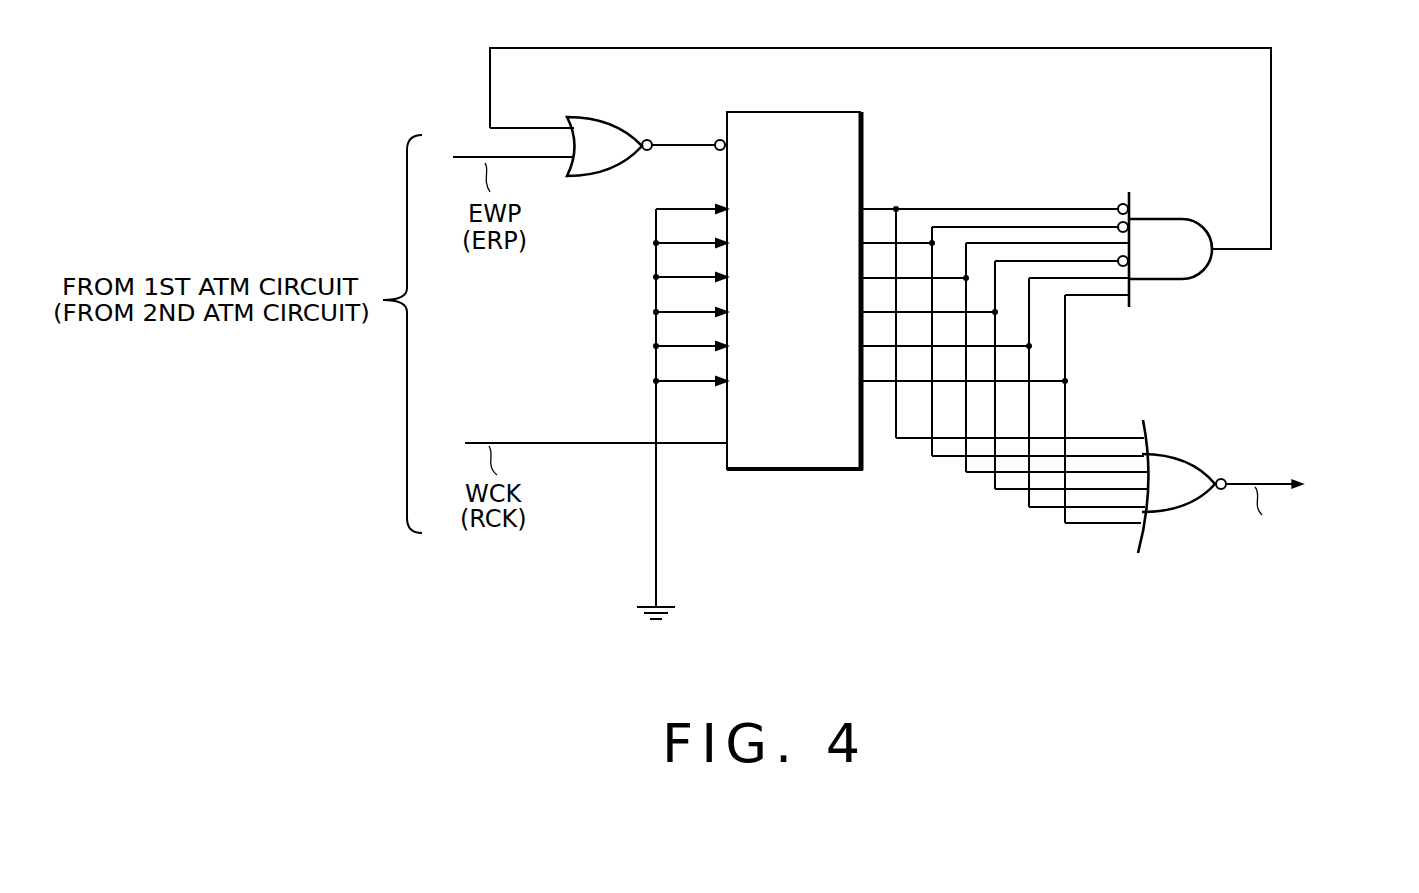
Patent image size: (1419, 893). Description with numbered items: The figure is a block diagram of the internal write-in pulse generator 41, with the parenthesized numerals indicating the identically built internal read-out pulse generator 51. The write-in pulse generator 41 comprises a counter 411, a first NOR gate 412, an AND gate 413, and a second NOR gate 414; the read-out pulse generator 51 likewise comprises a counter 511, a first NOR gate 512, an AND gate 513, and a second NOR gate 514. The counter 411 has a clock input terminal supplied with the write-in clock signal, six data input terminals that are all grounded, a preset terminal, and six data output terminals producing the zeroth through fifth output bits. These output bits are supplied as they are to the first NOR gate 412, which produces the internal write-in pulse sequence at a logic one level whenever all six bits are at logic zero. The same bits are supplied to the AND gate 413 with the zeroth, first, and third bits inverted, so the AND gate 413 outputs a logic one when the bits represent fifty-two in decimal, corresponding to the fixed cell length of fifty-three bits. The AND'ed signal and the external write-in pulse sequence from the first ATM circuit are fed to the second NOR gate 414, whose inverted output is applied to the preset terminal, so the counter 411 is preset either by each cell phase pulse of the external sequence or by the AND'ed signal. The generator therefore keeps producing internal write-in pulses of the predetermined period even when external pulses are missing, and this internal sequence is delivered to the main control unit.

The internal write-in pulse generator 41 is at (1094, 653).
The internal read-out pulse generator 51 is at (1048, 592).
The counter 411 is at (795, 337).
The counter 511 is at (788, 470).
The first NOR gate 412 is at (1264, 475).
The first NOR gate 512 is at (1167, 452).
The AND gate 413 is at (881, 200).
The AND gate 513 is at (1175, 280).
The second NOR gate 414 is at (607, 118).
The second NOR gate 514 is at (592, 118).